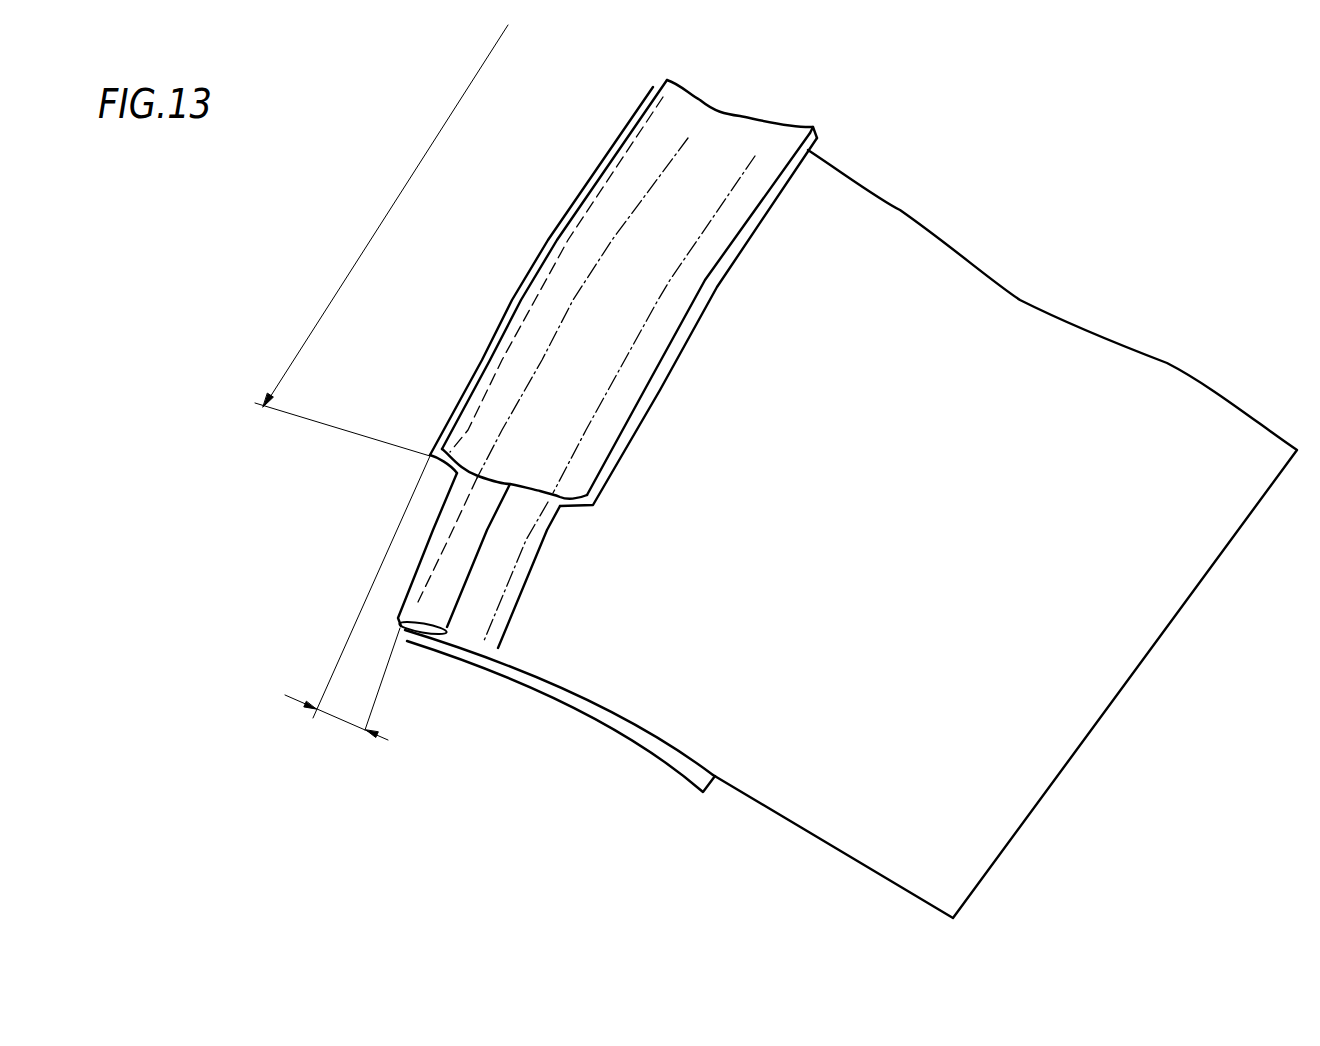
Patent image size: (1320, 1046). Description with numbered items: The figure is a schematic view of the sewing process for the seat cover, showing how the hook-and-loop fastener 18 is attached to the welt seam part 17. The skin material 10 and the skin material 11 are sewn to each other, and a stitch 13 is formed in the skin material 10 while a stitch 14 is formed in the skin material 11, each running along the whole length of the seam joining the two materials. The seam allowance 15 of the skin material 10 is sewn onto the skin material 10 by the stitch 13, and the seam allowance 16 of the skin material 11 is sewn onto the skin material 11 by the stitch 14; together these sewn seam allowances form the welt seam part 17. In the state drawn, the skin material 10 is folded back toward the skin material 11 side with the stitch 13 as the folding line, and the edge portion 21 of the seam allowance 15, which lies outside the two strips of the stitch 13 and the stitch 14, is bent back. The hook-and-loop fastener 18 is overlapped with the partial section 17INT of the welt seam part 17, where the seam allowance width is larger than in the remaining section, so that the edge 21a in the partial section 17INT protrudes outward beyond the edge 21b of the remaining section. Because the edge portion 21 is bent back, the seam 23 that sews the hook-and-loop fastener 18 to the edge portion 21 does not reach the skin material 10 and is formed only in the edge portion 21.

The skin material 10 is at (682, 777).
The skin material 11 is at (1037, 337).
The stitch 13 is at (442, 548).
The stitch 14 is at (515, 565).
The seam allowance 15 is at (433, 613).
The seam allowance 16 is at (472, 620).
The welt seam part 17 is at (484, 660).
The partial section 17INT is at (381, 240).
The hook-and-loop fastener 18 is at (718, 128).
The edge portion 21 is at (338, 722).
The edge 21a is at (620, 137).
The edge 21b is at (437, 517).
The seam 23 is at (522, 322).